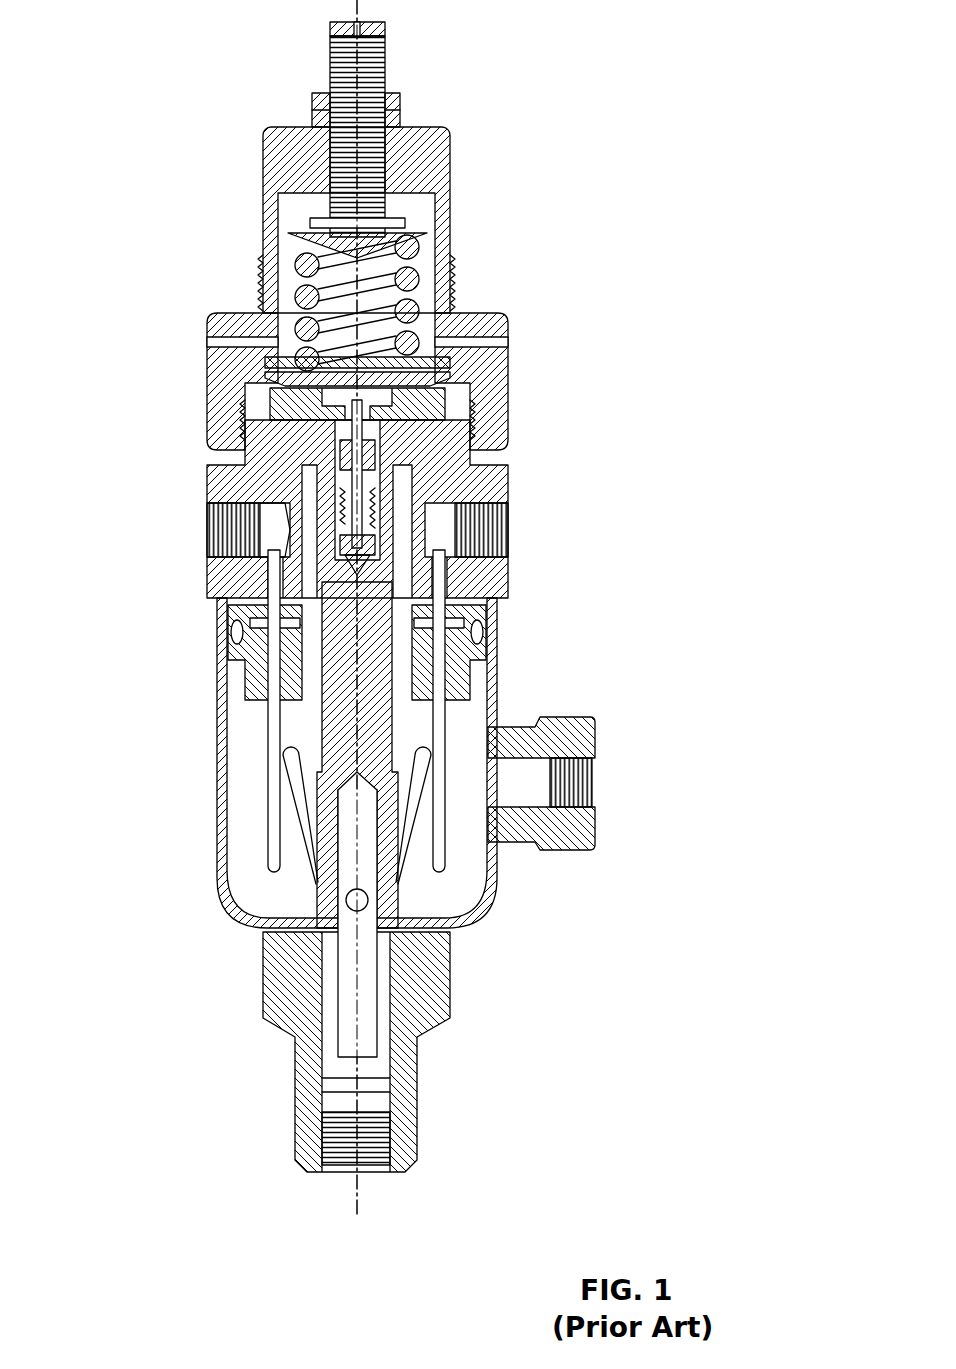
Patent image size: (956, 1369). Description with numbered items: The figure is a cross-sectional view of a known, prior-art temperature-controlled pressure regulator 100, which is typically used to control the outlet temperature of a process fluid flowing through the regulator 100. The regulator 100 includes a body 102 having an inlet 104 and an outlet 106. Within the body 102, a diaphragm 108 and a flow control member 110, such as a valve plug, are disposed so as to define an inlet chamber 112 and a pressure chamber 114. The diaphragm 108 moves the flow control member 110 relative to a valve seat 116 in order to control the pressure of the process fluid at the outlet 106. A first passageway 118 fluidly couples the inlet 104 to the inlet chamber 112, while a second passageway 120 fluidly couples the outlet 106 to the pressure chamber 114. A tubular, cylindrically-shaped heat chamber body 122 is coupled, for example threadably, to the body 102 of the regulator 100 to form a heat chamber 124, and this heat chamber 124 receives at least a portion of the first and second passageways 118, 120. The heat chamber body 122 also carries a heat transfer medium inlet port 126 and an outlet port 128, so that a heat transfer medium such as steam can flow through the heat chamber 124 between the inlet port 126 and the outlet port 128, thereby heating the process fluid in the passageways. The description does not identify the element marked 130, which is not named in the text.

The temperature-controlled pressure regulator 100 is at (139, 44).
The body 102 is at (483, 315).
The inlet 104 is at (508, 537).
The outlet 106 is at (207, 533).
The diaphragm 108 is at (470, 382).
The flow control member 110 is at (375, 478).
The inlet chamber 112 is at (348, 477).
The pressure chamber 114 is at (287, 398).
The valve seat 116 is at (345, 455).
The first passageway 118 is at (442, 727).
The second passageway 120 is at (265, 742).
The heat chamber body 122 is at (497, 660).
The heat chamber 124 is at (430, 902).
The heat transfer medium inlet port 126 is at (575, 718).
The outlet port 128 is at (372, 1172).
The cup 130 is at (220, 793).